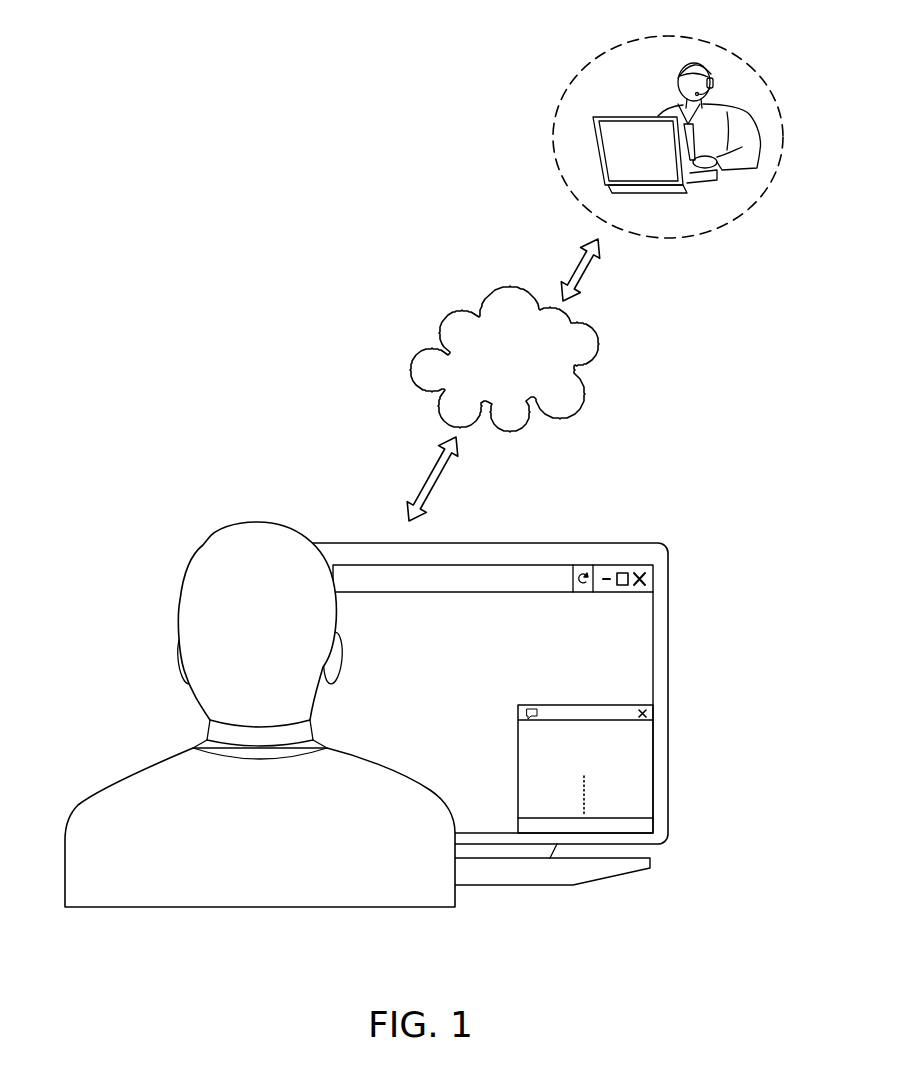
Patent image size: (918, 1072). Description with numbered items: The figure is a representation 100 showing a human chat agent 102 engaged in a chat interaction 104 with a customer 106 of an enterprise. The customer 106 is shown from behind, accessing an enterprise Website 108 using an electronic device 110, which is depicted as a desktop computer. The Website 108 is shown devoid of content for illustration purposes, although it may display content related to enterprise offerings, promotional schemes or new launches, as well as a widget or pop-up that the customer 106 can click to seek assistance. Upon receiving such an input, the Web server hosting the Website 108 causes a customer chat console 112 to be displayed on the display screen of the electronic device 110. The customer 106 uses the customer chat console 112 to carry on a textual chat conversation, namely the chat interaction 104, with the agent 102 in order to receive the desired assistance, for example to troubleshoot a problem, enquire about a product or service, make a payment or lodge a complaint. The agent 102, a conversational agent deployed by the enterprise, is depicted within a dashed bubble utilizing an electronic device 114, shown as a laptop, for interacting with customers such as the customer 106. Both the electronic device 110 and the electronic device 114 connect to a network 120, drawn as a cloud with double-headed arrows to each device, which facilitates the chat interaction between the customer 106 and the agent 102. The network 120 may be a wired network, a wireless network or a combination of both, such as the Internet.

The representation 100 is at (745, 932).
The human chat agent 102 is at (747, 113).
The chat interaction 104 is at (637, 772).
The customer 106 is at (183, 557).
The enterprise Website 108 is at (410, 577).
The electronic device 110 is at (573, 543).
The customer chat console 112 is at (640, 705).
The electronic device 114 is at (593, 117).
The network 120 is at (504, 359).